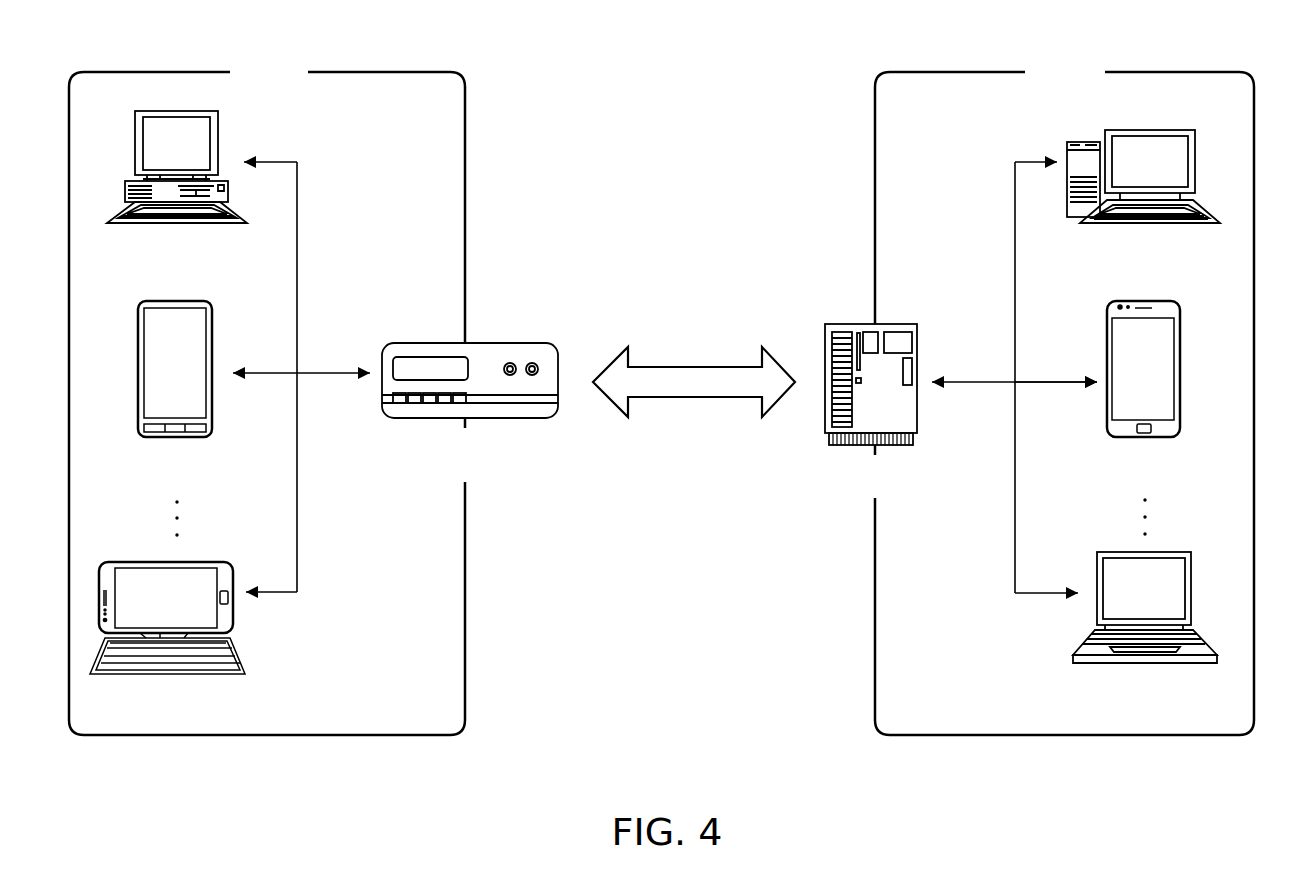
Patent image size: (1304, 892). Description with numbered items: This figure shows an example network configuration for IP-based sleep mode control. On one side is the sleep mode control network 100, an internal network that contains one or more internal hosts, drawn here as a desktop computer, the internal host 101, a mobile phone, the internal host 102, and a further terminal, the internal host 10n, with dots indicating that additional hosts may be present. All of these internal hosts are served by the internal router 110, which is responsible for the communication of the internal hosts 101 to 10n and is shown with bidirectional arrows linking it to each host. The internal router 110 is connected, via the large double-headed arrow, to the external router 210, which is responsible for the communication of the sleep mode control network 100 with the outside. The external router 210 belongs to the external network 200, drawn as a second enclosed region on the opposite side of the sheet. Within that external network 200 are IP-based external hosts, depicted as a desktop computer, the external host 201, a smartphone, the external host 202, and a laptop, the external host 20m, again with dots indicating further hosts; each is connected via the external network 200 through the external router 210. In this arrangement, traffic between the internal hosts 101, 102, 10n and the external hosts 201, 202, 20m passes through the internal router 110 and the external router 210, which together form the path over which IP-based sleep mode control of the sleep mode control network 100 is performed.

The sleep mode control network 100 is at (245, 81).
The internal host 101 is at (177, 192).
The internal host 102 is at (175, 384).
The internal host 10n is at (167, 638).
The internal router 110 is at (470, 405).
The external network 200 is at (1041, 81).
The external host 201 is at (1143, 202).
The external host 202 is at (1143, 389).
The external host 20m is at (1145, 634).
The external router 210 is at (871, 404).